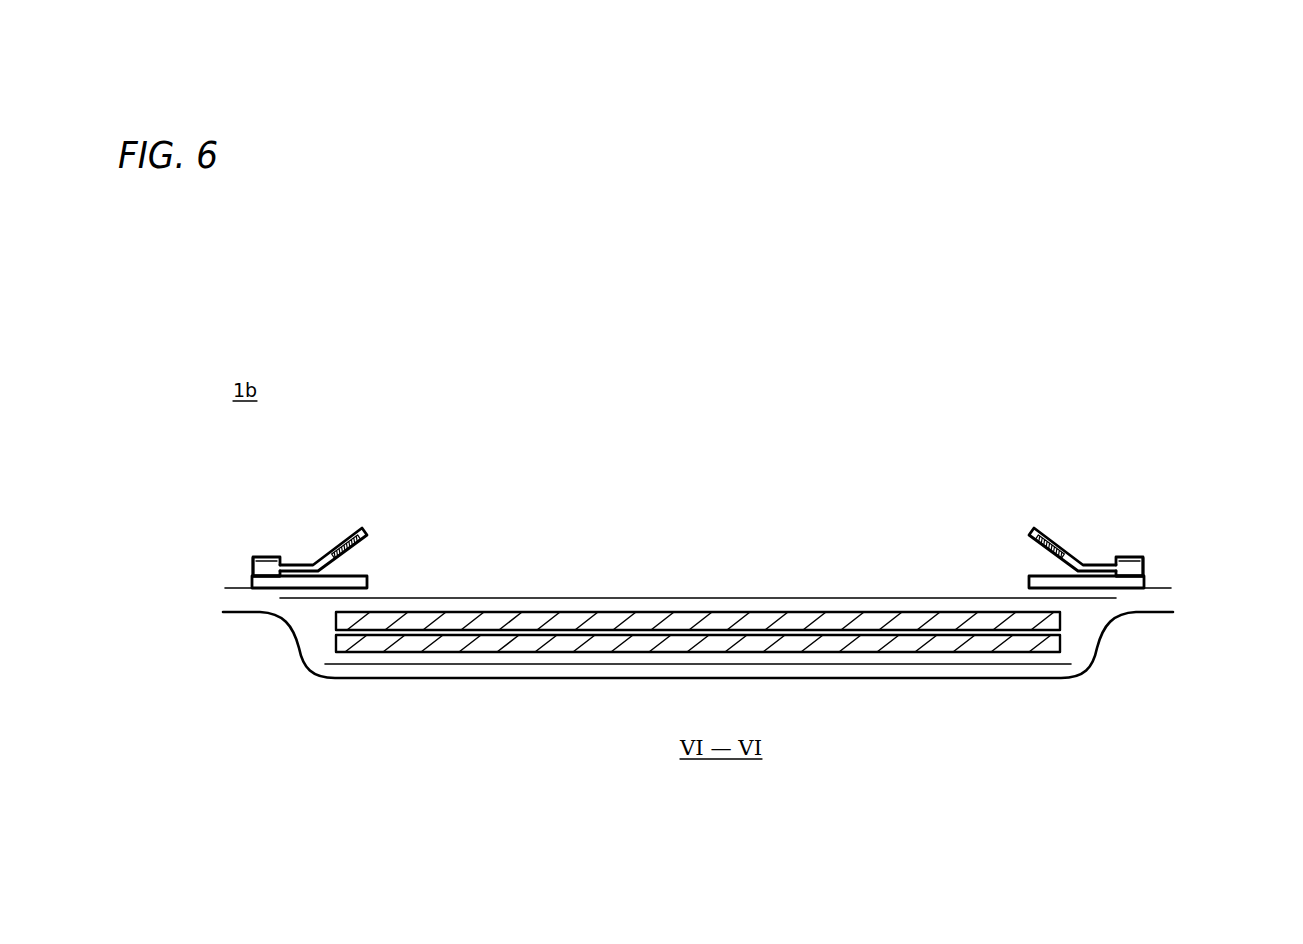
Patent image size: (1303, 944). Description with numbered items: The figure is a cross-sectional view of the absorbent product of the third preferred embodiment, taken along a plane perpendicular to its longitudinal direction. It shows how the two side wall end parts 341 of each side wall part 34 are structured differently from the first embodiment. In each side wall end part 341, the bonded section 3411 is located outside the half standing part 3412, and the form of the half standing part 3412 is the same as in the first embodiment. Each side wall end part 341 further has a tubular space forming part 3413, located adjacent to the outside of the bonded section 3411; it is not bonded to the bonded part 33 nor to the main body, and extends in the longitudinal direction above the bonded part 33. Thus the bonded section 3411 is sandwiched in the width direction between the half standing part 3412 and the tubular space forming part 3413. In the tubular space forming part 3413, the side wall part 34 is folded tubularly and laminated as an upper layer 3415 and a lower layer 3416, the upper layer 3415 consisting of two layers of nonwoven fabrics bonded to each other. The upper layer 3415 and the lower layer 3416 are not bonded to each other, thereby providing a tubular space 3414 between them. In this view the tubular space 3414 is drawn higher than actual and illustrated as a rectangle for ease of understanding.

The bonded part 33 is at (238, 588).
The side wall part 34 is at (164, 420).
The side wall end part 341 is at (224, 472).
The bonded section 3411 is at (293, 566).
The half standing part 3412 is at (340, 543).
The tubular space forming part 3413 is at (189, 501).
The tubular space 3414 is at (238, 564).
The upper layer 3415 is at (267, 556).
The lower layer 3416 is at (268, 578).